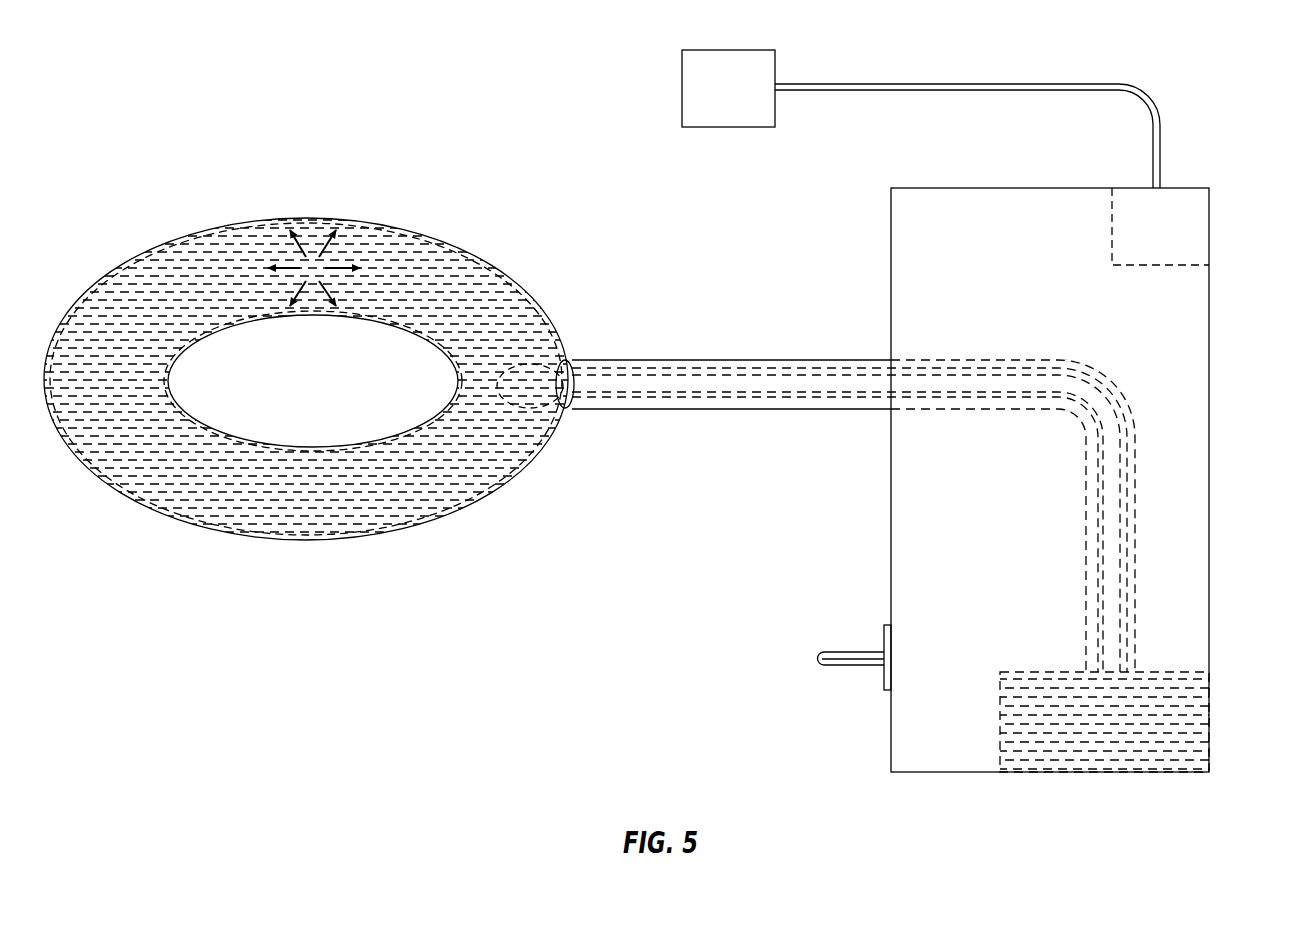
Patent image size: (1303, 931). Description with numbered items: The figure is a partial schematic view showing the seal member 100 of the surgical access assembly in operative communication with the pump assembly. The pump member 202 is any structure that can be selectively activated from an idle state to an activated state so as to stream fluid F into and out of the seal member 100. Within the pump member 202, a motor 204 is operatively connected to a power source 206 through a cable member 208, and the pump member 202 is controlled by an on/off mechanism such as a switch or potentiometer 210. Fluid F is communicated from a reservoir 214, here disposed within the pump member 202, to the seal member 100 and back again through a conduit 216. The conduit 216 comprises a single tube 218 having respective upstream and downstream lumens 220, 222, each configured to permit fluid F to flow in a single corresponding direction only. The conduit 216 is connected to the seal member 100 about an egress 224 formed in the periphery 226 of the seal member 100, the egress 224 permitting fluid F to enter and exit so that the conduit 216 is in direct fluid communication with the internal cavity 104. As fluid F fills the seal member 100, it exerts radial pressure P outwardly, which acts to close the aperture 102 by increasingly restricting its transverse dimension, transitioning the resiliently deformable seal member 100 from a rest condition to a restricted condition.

The seal member 100 is at (294, 348).
The aperture 102 is at (200, 421).
The internal cavity 104 is at (176, 300).
The pump member 202 is at (1210, 482).
The motor 204 is at (1192, 228).
The power source 206 is at (726, 50).
The cable member 208 is at (961, 84).
The switch or potentiometer 210 is at (818, 658).
The reservoir 214 is at (1188, 670).
The conduit 216 is at (852, 494).
The single tube 218 is at (679, 411).
The upstream lumen 220 is at (808, 399).
The downstream lumen 222 is at (718, 366).
The egress 224 is at (571, 361).
The periphery 226 is at (522, 298).
The radial pressure P is at (314, 268).
The fluid F is at (1172, 725).